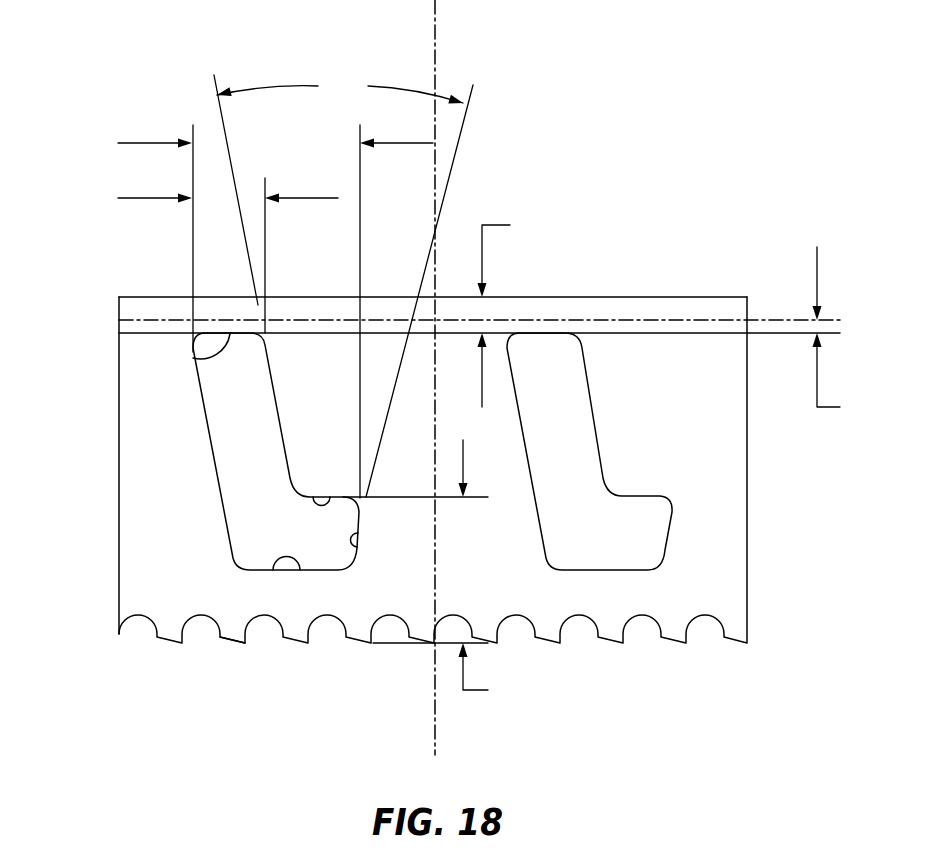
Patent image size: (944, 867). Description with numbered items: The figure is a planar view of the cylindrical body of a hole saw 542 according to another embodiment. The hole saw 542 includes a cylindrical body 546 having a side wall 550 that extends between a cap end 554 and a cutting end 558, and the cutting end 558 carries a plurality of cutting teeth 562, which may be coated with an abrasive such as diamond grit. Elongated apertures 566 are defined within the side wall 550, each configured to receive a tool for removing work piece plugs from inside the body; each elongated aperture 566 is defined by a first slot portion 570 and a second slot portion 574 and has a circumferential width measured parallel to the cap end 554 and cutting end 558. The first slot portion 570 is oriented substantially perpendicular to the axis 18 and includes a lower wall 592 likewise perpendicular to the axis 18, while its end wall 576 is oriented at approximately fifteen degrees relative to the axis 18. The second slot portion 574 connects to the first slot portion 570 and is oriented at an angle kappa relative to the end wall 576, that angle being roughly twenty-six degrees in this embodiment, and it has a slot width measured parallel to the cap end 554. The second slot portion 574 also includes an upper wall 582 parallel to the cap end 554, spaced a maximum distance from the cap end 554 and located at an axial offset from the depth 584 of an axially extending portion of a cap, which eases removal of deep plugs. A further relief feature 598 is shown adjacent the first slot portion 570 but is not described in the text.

The axis 18 is at (440, 32).
The hole saw 542 is at (449, 377).
The cylindrical body 546 is at (391, 482).
The side wall 550 is at (193, 358).
The cap end 554 is at (158, 296).
The cutting end 558 is at (181, 644).
The cutting teeth 562 is at (244, 644).
The elongated aperture 566 is at (356, 532).
The first slot portion 570 is at (302, 647).
The second slot portion 574 is at (226, 477).
The end wall 576 is at (350, 543).
The upper wall 582 is at (141, 438).
The depth 584 is at (602, 313).
The lower wall 592 is at (296, 562).
The notch relief 598 is at (314, 495).